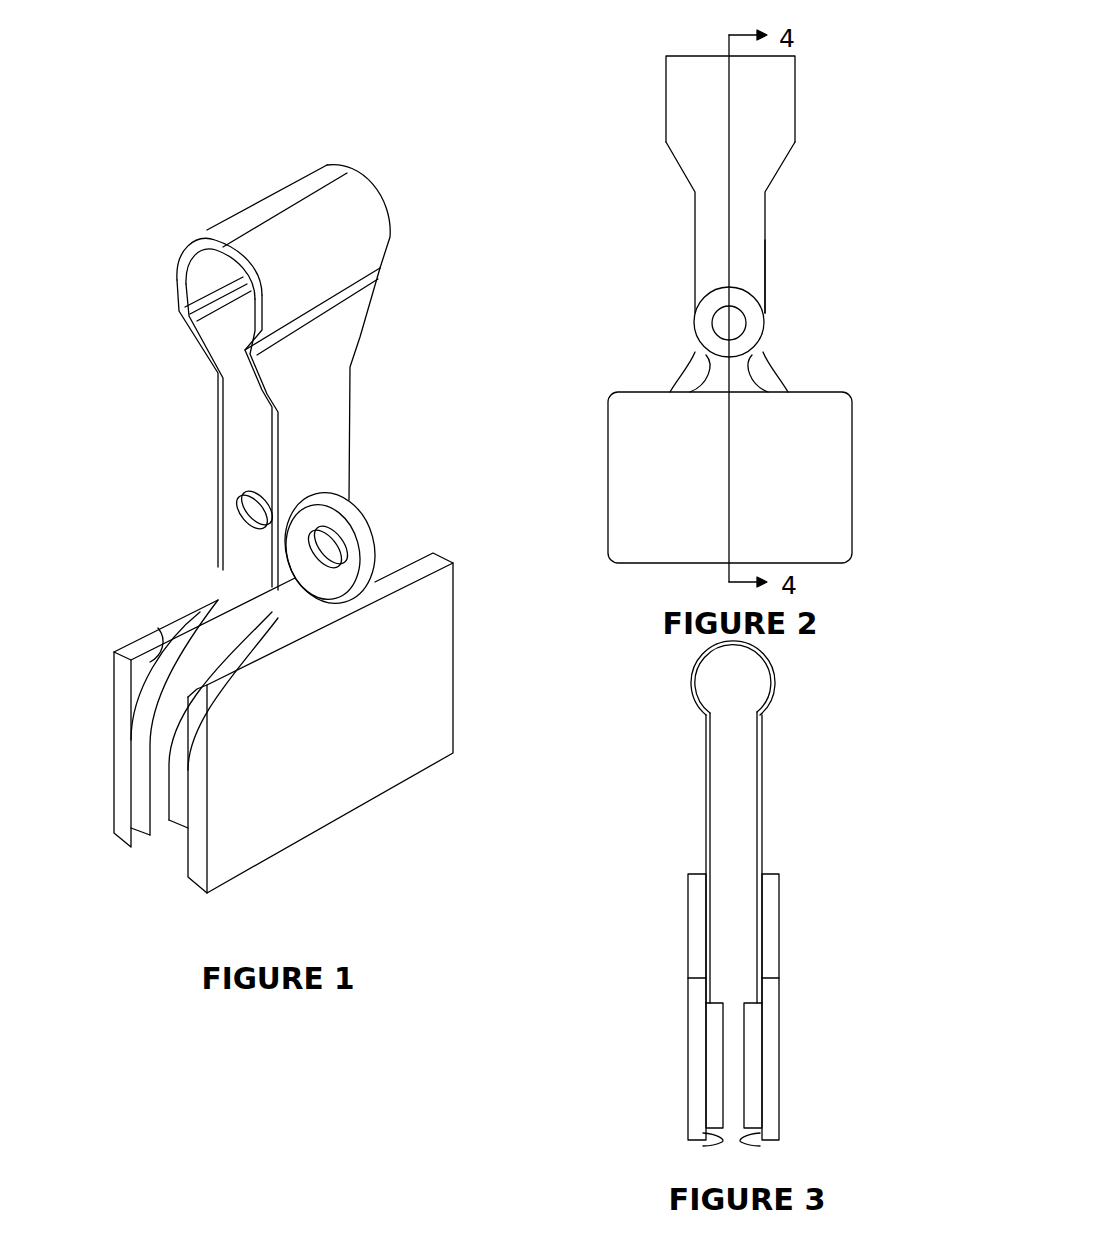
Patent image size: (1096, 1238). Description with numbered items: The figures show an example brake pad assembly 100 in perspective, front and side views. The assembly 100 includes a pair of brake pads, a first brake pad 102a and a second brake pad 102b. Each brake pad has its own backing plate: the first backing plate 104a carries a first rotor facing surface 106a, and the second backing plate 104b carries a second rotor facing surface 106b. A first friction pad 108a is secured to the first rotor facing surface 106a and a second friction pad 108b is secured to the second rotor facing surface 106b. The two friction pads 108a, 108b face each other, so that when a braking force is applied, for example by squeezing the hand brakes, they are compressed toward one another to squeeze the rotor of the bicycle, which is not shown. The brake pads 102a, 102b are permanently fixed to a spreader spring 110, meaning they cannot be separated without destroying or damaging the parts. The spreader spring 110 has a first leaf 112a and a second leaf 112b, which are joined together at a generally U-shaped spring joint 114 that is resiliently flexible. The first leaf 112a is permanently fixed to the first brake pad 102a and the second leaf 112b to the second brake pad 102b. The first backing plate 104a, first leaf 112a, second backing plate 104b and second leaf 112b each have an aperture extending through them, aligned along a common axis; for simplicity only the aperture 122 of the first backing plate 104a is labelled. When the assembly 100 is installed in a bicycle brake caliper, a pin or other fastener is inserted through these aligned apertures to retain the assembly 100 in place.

In FIG. 1, the brake pad assembly 100 is at (165, 229).
In FIG. 2, the brake pad assembly 100 is at (594, 240).
In FIG. 3, the brake pad assembly 100 is at (622, 911).
In FIG. 1, the first brake pad 102a is at (352, 774).
In FIG. 2, the first brake pad 102a is at (792, 516).
In FIG. 3, the first brake pad 102a is at (782, 1097).
In FIG. 1, the second brake pad 102b is at (95, 668).
In FIG. 3, the second brake pad 102b is at (680, 1055).
In FIG. 1, the first backing plate 104a is at (400, 720).
In FIG. 2, the first backing plate 104a is at (798, 463).
In FIG. 3, the first backing plate 104a is at (773, 1060).
In FIG. 1, the second backing plate 104b is at (120, 682).
In FIG. 3, the second backing plate 104b is at (687, 1079).
In FIG. 3, the first rotor facing surface 106a is at (745, 1142).
In FIG. 1, the second rotor facing surface 106b is at (157, 657).
In FIG. 3, the second rotor facing surface 106b is at (722, 1142).
In FIG. 1, the first friction pad 108a is at (180, 827).
In FIG. 3, the first friction pad 108a is at (750, 1038).
In FIG. 1, the second friction pad 108b is at (147, 767).
In FIG. 3, the second friction pad 108b is at (714, 1078).
In FIG. 1, the spreader spring 110 is at (333, 348).
In FIG. 2, the spreader spring 110 is at (752, 222).
In FIG. 3, the spreader spring 110 is at (755, 782).
In FIG. 1, the first leaf 112a is at (323, 443).
In FIG. 2, the first leaf 112a is at (748, 263).
In FIG. 3, the first leaf 112a is at (760, 837).
In FIG. 1, the second leaf 112b is at (237, 446).
In FIG. 3, the second leaf 112b is at (700, 835).
In FIG. 1, the spring joint 114 is at (295, 182).
In FIG. 2, the spring joint 114 is at (767, 82).
In FIG. 3, the spring joint 114 is at (773, 673).
In FIG. 2, the aperture 122 is at (737, 323).